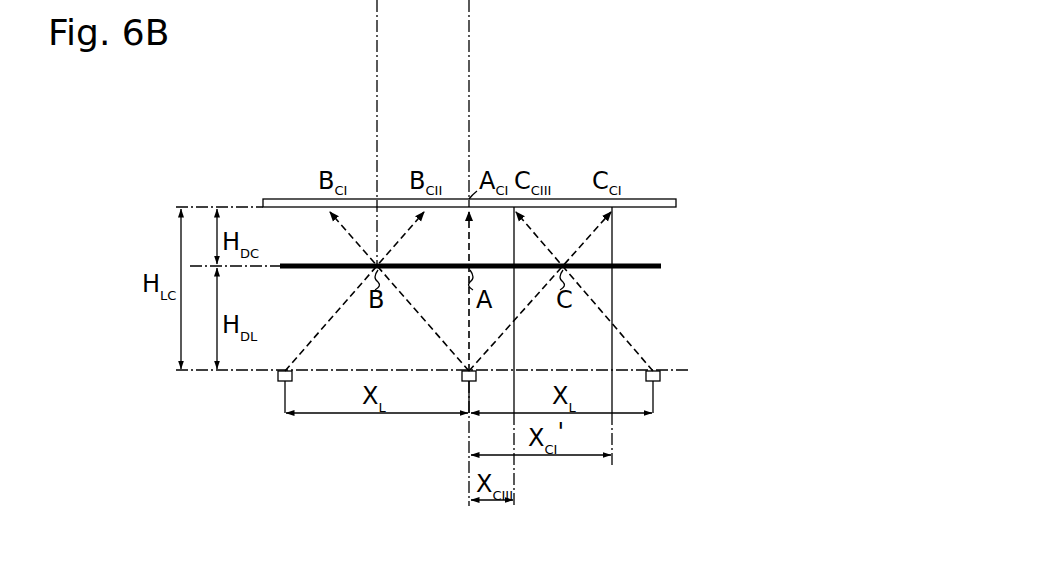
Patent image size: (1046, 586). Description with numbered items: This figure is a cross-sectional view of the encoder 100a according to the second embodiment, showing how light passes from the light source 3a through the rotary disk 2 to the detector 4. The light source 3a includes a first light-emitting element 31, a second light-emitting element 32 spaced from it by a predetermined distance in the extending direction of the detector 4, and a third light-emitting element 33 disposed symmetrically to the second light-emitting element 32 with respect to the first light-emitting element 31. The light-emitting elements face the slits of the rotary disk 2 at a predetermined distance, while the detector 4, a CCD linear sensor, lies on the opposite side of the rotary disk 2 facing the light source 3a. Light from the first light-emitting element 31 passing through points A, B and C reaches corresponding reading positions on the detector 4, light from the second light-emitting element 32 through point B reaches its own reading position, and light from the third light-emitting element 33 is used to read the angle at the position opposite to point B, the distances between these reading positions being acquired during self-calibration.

The encoder 100a is at (655, 130).
The detector 4 is at (652, 199).
The rotary disk 2 is at (656, 264).
The first light-emitting element 31 is at (461, 383).
The second light-emitting element 32 is at (278, 381).
The third light-emitting element 33 is at (661, 378).
The light source 3a is at (698, 447).